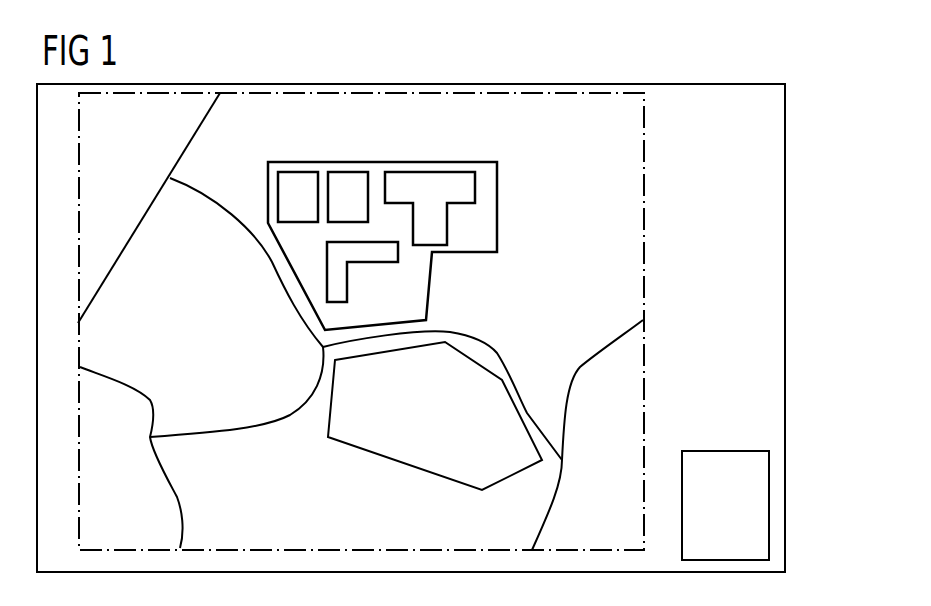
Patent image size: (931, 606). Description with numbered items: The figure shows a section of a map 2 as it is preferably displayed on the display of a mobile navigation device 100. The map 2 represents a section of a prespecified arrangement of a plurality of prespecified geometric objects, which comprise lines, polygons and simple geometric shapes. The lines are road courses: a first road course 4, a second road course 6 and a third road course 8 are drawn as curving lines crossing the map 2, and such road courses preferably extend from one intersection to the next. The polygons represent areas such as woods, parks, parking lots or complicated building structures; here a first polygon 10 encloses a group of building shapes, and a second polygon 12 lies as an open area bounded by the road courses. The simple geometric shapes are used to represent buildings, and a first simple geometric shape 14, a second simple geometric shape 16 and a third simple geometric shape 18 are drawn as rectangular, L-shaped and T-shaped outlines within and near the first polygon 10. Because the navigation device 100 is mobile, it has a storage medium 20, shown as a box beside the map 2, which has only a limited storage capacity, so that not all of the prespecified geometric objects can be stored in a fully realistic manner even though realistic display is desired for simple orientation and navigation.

The navigation device 100 is at (786, 297).
The map 2 is at (645, 250).
The first road course 4 is at (500, 355).
The second road course 6 is at (272, 268).
The third road course 8 is at (233, 435).
The first polygon 10 is at (497, 203).
The second polygon 12 is at (403, 465).
The first simple geometric shape 14 is at (294, 172).
The second simple geometric shape 16 is at (350, 268).
The third simple geometric shape 18 is at (428, 172).
The storage medium 20 is at (770, 508).